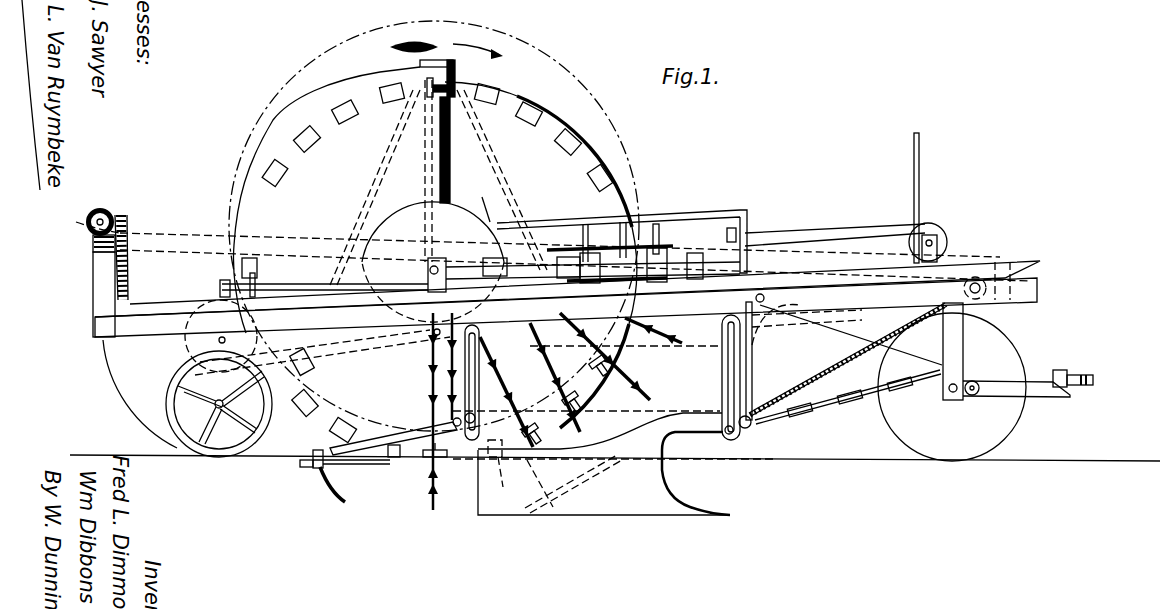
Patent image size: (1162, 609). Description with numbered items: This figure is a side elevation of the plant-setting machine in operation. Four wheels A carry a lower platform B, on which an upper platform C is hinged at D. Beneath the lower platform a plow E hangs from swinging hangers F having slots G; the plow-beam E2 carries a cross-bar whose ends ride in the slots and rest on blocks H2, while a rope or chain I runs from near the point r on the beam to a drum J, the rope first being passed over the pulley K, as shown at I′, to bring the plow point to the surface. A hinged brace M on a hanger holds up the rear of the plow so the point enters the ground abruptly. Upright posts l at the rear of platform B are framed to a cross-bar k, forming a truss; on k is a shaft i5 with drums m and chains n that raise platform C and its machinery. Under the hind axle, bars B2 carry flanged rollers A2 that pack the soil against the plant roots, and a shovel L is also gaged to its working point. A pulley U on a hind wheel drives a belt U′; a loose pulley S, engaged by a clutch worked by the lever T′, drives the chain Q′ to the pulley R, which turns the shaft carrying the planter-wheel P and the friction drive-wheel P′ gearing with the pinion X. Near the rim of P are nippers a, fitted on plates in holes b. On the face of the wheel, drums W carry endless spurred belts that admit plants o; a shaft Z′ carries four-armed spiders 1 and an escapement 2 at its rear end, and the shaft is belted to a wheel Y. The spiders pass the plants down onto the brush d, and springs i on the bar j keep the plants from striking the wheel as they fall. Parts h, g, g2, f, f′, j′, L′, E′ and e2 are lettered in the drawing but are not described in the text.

The planter-wheel P is at (434, 226).
The holes b is at (298, 144).
The post h is at (446, 140).
The bracket plate g is at (435, 60).
The bracket arm g2 is at (450, 62).
The guide rod f is at (422, 90).
The guide arms f′ is at (438, 187).
The friction-gear drive-wheel P′ is at (428, 205).
The pinion X is at (477, 198).
The pulley R is at (428, 270).
The shaft Z′ is at (292, 284).
The escapement 2 is at (243, 270).
The bar j is at (720, 212).
The frame bracket j′ is at (748, 232).
The wheel Y is at (579, 228).
The four-armed spiders 1 is at (621, 225).
The springs i is at (655, 221).
The drums W is at (600, 285).
The brush d is at (672, 308).
The drive chain or belt U′ is at (832, 233).
The drive-chain Q′ is at (790, 240).
The lever T′ is at (919, 160).
The loose pulley S is at (950, 243).
The hinge D is at (1004, 269).
The upper platform C is at (168, 294).
The lower platform B is at (571, 310).
The drum J is at (976, 292).
The upright posts l is at (93, 292).
The drums m is at (117, 218).
The cross-bar k is at (92, 245).
The shaft i5 is at (89, 215).
The chains n is at (130, 272).
The pulley U is at (190, 347).
The bars B2 is at (372, 356).
The wheels A is at (140, 405).
The rollers A2 is at (225, 420).
The shovel L is at (328, 478).
The shovel lever L′ is at (372, 462).
The slots G is at (468, 440).
The plants o is at (553, 351).
The chute E′ is at (505, 392).
The nippers a is at (610, 365).
The brace M is at (555, 420).
The plow E is at (614, 439).
The blocks or stops H2 is at (696, 473).
The swinging hangers F is at (672, 352).
The pulley K is at (762, 305).
The rope position over pulley I′ is at (814, 320).
The rope or chain I is at (848, 359).
The plow-beam point r is at (848, 398).
The plow-beam E2 is at (752, 425).
The guide lines e2 is at (580, 500).